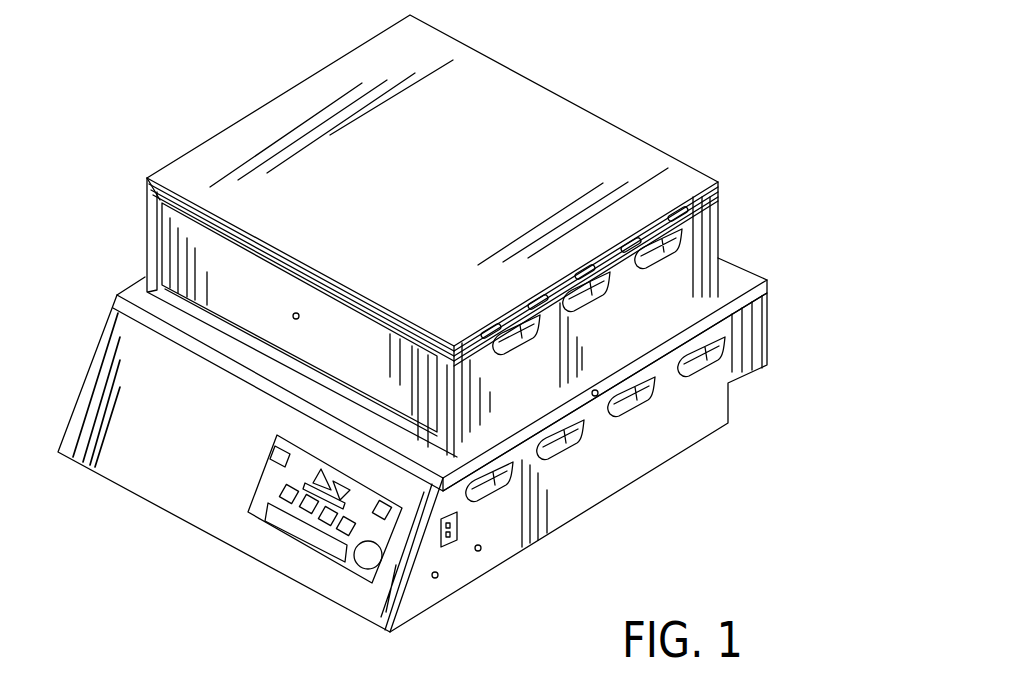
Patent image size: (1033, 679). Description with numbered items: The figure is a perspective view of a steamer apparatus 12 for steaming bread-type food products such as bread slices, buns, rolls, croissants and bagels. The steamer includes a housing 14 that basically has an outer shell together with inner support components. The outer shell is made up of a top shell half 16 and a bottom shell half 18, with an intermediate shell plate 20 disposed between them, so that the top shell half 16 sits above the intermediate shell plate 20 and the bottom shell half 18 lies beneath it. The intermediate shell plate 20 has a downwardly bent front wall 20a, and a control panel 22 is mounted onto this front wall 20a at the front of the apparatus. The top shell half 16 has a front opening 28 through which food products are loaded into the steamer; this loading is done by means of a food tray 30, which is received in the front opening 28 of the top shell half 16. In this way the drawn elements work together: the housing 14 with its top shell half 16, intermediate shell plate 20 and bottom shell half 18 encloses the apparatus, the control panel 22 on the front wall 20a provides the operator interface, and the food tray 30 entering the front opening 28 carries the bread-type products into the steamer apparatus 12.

The steamer apparatus 12 is at (605, 97).
The housing 14 is at (768, 280).
The top shell half 16 is at (255, 135).
The bottom shell half 18 is at (613, 448).
The intermediate shell plate 20 is at (503, 428).
The downwardly bent front wall 20a is at (198, 487).
The control panel 22 is at (372, 527).
The front opening 28 is at (415, 383).
The food tray 30 is at (295, 278).